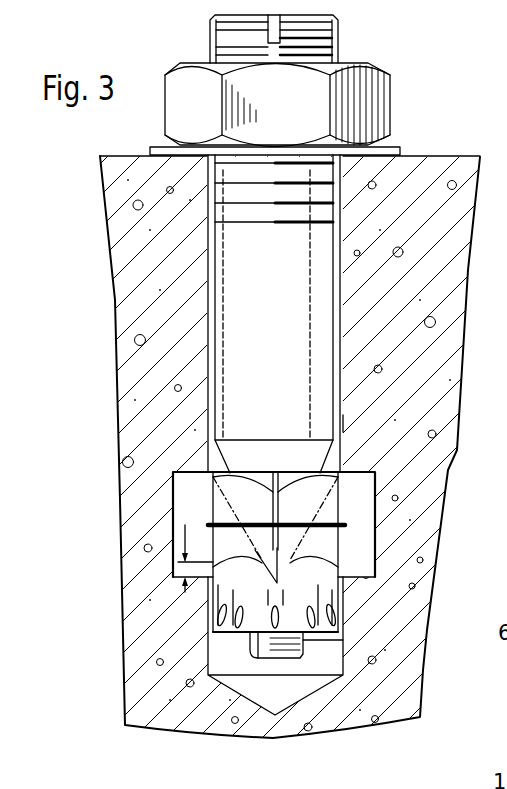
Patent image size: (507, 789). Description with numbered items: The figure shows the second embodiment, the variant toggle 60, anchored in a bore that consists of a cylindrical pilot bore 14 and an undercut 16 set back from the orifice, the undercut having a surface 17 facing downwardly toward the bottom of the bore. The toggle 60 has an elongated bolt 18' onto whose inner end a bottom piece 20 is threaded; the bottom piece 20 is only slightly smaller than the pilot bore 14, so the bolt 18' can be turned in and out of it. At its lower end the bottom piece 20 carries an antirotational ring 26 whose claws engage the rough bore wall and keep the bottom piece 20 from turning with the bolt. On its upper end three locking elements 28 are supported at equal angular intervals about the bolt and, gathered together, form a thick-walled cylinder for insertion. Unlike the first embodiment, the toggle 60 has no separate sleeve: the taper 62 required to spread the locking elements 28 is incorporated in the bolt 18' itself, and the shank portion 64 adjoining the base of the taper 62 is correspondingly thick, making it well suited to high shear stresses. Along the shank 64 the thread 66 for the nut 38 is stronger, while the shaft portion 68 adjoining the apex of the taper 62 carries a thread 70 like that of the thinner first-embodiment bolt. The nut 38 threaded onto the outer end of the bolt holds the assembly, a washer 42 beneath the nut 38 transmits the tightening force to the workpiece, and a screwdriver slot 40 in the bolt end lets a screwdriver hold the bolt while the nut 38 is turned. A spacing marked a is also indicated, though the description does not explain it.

The pilot bore 14 is at (343, 310).
The undercut 16 is at (375, 570).
The surface 17 is at (375, 476).
The bolt 18' is at (324, 299).
The bottom piece 20 is at (345, 608).
The ring 26 is at (212, 675).
The locking elements 28 is at (210, 522).
The nut 38 is at (365, 117).
The screwdriver slot 40 is at (268, 32).
The washer 42 is at (400, 151).
The toggle 60 is at (347, 424).
The taper 62 is at (275, 513).
The shank portion 64 is at (266, 340).
The thread 66 is at (330, 48).
The shaft portion 68 is at (248, 655).
The thread 70 is at (305, 646).
The spacing a is at (178, 562).